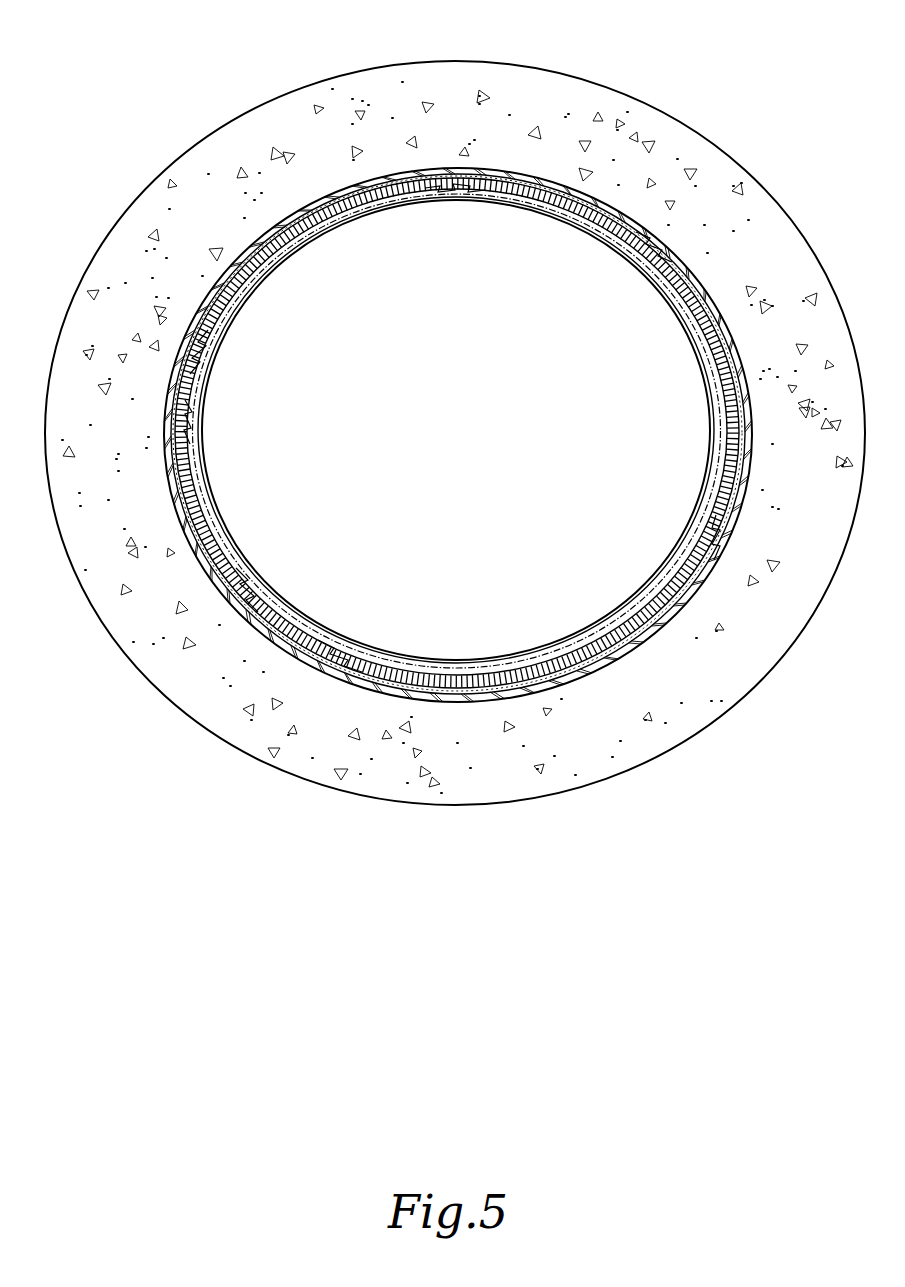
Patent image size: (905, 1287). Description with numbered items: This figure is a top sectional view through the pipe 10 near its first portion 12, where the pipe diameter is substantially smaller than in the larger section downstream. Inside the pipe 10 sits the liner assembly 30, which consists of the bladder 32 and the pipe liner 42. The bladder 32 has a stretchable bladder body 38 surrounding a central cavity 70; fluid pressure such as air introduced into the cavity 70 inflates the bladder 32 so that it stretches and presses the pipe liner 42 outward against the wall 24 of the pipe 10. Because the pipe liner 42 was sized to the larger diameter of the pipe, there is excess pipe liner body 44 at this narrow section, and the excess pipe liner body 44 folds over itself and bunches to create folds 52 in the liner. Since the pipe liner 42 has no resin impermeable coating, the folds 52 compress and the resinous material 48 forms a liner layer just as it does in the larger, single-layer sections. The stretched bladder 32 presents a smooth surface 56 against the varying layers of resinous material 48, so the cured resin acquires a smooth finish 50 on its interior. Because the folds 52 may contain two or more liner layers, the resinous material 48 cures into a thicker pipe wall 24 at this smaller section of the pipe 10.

The pipe 10 is at (722, 52).
The first portion 12 is at (616, 110).
The wall 24 is at (684, 591).
The liner assembly 30 is at (695, 427).
The bladder 32 is at (606, 608).
The bladder body 38 is at (344, 648).
The pipe liner 42 is at (713, 540).
The pipe liner body 44 is at (458, 186).
The resinous material 48 is at (190, 421).
The smooth finish 50 is at (245, 590).
The folds 52 is at (192, 350).
The smooth surface 56 is at (651, 243).
The cavity 70 is at (446, 443).